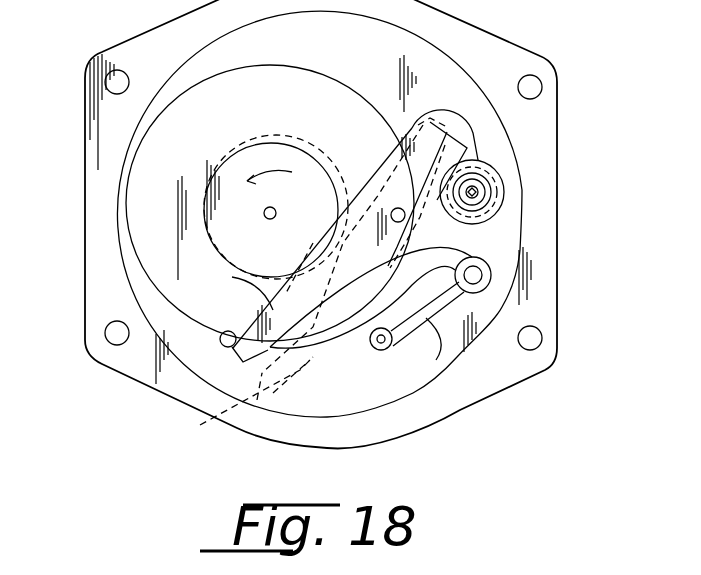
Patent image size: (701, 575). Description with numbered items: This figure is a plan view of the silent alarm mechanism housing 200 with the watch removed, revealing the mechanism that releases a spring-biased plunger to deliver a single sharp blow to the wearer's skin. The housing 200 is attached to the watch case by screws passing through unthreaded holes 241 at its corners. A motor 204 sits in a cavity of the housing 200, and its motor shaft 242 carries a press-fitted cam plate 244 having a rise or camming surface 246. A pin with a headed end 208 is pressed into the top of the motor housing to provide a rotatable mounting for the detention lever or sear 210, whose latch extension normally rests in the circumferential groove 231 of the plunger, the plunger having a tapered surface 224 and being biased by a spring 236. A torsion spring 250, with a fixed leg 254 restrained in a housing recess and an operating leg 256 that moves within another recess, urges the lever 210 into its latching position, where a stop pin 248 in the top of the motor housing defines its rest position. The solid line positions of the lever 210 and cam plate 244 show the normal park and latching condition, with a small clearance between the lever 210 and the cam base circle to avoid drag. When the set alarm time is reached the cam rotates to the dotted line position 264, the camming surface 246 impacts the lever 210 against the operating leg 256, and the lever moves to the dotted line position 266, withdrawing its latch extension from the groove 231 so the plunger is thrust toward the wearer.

The silent alarm mechanism housing 200 is at (560, 228).
The unthreaded holes 241 is at (542, 85).
The motor 204 is at (288, 74).
The cam plate 244 is at (312, 199).
The camming surface 246 is at (333, 152).
The motor shaft 242 is at (272, 219).
The dotted line position of the cam 264 is at (355, 241).
The tapered surface 224 is at (500, 175).
The spring 236 is at (480, 193).
The circumferential groove 231 is at (497, 207).
The headed end 208 is at (402, 222).
The operating leg 256 is at (308, 326).
The stop pin 248 is at (235, 303).
The detention lever 210 is at (229, 285).
The torsion spring 250 is at (491, 273).
The fixed leg 254 is at (405, 345).
The dotted line position of the lever 266 is at (231, 397).